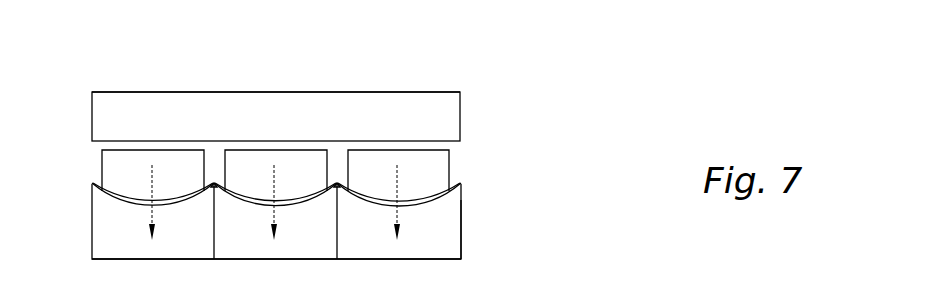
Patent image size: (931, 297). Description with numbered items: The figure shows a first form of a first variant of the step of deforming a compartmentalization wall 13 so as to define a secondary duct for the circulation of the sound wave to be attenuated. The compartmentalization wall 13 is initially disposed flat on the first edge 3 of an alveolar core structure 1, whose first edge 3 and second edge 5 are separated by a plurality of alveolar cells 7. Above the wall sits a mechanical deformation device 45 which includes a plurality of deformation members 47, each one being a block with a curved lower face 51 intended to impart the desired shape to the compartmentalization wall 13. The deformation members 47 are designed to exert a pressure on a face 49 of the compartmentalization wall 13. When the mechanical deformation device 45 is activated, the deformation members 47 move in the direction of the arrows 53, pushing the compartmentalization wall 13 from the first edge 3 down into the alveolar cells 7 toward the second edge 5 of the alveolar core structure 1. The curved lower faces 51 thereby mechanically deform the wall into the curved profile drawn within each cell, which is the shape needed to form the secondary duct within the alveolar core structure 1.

The alveolar core structure 1 is at (468, 212).
The first edge 3 is at (301, 131).
The second edge 5 is at (461, 259).
The alveolar cells 7 is at (461, 232).
The compartmentalization wall 13 is at (457, 178).
The mechanical deformation device 45 is at (420, 92).
The deformation members 47 is at (100, 167).
The face 49 is at (212, 182).
The curved lower face 51 is at (121, 192).
The arrows 53 is at (163, 173).